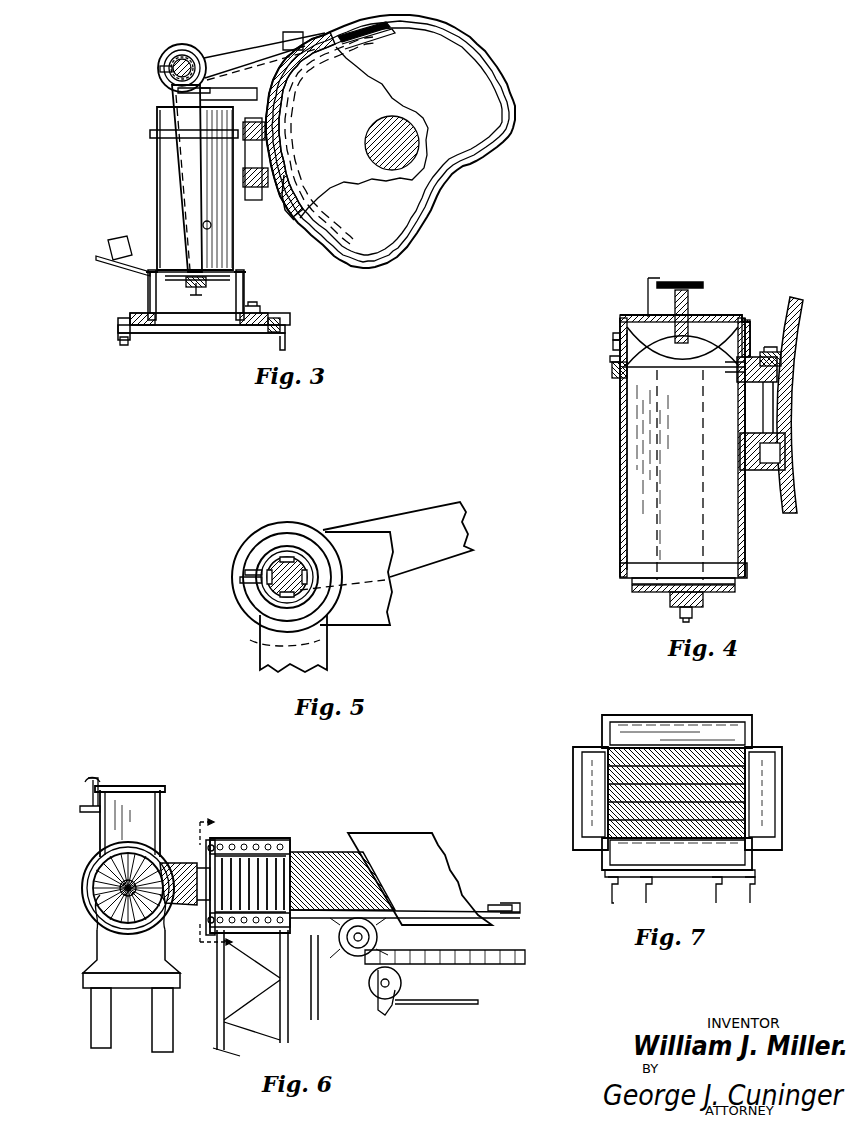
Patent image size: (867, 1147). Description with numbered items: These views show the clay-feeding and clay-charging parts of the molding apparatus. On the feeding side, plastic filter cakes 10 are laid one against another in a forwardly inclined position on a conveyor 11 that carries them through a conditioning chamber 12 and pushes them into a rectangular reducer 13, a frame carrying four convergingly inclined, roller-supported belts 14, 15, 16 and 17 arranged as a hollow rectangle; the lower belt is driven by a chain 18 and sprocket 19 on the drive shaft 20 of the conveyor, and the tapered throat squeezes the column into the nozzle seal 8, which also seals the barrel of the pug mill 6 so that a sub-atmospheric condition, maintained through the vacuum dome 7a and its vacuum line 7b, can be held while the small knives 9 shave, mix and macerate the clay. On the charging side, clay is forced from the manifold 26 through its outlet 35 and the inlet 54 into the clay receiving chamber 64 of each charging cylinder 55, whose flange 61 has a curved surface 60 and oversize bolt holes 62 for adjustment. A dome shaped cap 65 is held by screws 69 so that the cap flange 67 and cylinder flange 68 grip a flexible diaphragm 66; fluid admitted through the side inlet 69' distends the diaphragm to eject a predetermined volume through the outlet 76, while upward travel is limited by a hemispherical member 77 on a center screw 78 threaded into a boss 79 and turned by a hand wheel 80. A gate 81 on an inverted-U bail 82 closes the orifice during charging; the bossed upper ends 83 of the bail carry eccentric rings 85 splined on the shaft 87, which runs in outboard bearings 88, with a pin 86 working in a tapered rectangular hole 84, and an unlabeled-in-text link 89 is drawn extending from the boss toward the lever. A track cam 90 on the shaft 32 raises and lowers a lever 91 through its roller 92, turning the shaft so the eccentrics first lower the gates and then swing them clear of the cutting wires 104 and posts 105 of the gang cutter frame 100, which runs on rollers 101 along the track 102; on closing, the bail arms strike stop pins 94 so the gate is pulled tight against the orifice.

In FIG. 6, the pug mill 6 is at (80, 898).
In FIG. 6, the vacuum dome 7a is at (162, 822).
In FIG. 6, the vacuum line 7b is at (88, 808).
In FIG. 6, the nozzle seal 8 is at (193, 862).
In FIG. 6, the small knives 9 is at (165, 858).
In FIG. 6, the filter cakes 10 is at (322, 850).
In FIG. 7, the filter cakes 10 is at (605, 748).
In FIG. 6, the conveyor 11 is at (508, 900).
In FIG. 6, the conditioning chamber 12 is at (400, 832).
In FIG. 6, the rectangular reducer 13 is at (247, 836).
In FIG. 6, the belt 14 is at (205, 915).
In FIG. 7, the belt 14 is at (608, 862).
In FIG. 7, the belt 15 is at (590, 830).
In FIG. 6, the belt 16 is at (280, 835).
In FIG. 7, the belt 16 is at (720, 718).
In FIG. 7, the belt 17 is at (772, 758).
In FIG. 6, the chain 18 is at (305, 928).
In FIG. 6, the sprocket 19 is at (368, 980).
In FIG. 6, the drive shaft 20 is at (345, 955).
In FIG. 3, the manifold 26 is at (282, 215).
In FIG. 3, the shaft 32 is at (420, 135).
In FIG. 3, the outlet 35 is at (256, 152).
In FIG. 4, the outlet 35 is at (785, 430).
In FIG. 3, the inlet 54 is at (275, 200).
In FIG. 4, the inlet 54 is at (765, 410).
In FIG. 3, the charging cylinder 55 is at (157, 155).
In FIG. 4, the charging cylinder 55 is at (620, 418).
In FIG. 4, the curved surface 60 is at (770, 345).
In FIG. 4, the flange 61 is at (766, 470).
In FIG. 4, the oversize bolt holes 62 is at (800, 378).
In FIG. 4, the clay receiving chamber 64 is at (627, 385).
In FIG. 4, the dome shaped cap 65 is at (712, 318).
In FIG. 4, the flexible diaphragm 66 is at (720, 362).
In FIG. 4, the cap flange 67 is at (610, 359).
In FIG. 4, the cylinder flange 68 is at (612, 372).
In FIG. 4, the screws 69 is at (599, 339).
In FIG. 4, the side inlet 69' is at (599, 325).
In FIG. 4, the outlet 76 is at (642, 590).
In FIG. 4, the hemispherical member 77 is at (733, 328).
In FIG. 4, the center screw 78 is at (690, 310).
In FIG. 4, the boss 79 is at (648, 325).
In FIG. 4, the hand wheel 80 is at (700, 282).
In FIG. 3, the gate 81 is at (220, 285).
In FIG. 4, the gate 81 is at (722, 593).
In FIG. 3, the bail 82 is at (175, 178).
In FIG. 4, the bail 82 is at (706, 532).
In FIG. 5, the bail 82 is at (330, 645).
In FIG. 3, the upper ends of bail 83 is at (170, 82).
In FIG. 5, the upper ends of bail 83 is at (268, 534).
In FIG. 5, the tapered rectangular hole 84 is at (245, 572).
In FIG. 3, the eccentric ring 85 is at (195, 62).
In FIG. 5, the eccentric ring 85 is at (318, 577).
In FIG. 3, the pin 86 is at (160, 69).
In FIG. 5, the pin 86 is at (240, 580).
In FIG. 3, the splined shaft 87 is at (185, 60).
In FIG. 5, the splined shaft 87 is at (293, 570).
In FIG. 3, the outboard bearings 88 is at (178, 52).
In FIG. 5, the outboard bearings 88 is at (240, 528).
In FIG. 3, the link 89 is at (270, 40).
In FIG. 5, the link 89 is at (388, 612).
In FIG. 3, the track cam 90 is at (517, 130).
In FIG. 3, the lever 91 is at (366, 30).
In FIG. 5, the lever 91 is at (438, 492).
In FIG. 3, the roller 92 is at (392, 28).
In FIG. 3, the stop pins 94 is at (211, 227).
In FIG. 3, the open frame 100 is at (262, 312).
In FIG. 3, the rollers 101 is at (282, 320).
In FIG. 3, the track 102 is at (283, 338).
In FIG. 3, the cutting wires 104 is at (160, 285).
In FIG. 3, the posts 105 is at (148, 298).